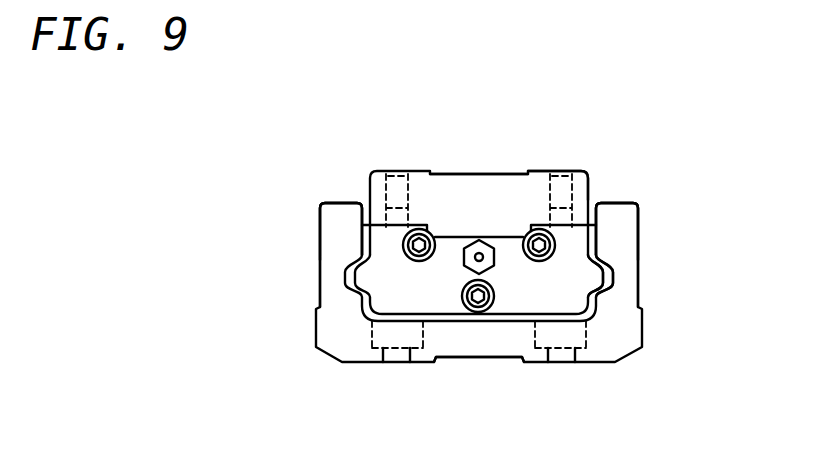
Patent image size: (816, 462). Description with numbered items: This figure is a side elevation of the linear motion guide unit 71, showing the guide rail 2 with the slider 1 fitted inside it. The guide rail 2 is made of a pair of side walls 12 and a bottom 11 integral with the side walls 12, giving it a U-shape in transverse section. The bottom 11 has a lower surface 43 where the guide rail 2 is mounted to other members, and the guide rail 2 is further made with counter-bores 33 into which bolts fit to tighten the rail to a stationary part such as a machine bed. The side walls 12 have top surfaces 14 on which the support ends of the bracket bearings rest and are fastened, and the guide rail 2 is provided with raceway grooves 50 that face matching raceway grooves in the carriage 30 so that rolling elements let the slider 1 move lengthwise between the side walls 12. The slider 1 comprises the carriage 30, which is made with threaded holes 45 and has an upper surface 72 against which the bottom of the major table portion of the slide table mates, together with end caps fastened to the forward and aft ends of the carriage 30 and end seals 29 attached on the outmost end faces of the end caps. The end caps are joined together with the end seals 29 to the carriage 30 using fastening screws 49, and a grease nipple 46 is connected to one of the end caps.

The slider 1 is at (503, 193).
The guide rail 2 is at (622, 314).
The bottom 11 is at (458, 360).
The side wall 12 is at (335, 222).
The top surface 14 is at (337, 202).
The end seal 29 is at (388, 273).
The carriage 30 is at (489, 207).
The counter-bore 33 is at (568, 343).
The lower surface 43 is at (360, 363).
The threaded hole 45 is at (397, 167).
The grease nipple 46 is at (478, 241).
The fastening screw 49 is at (538, 248).
The raceway groove 50 is at (610, 272).
The linear motion guide unit 71 is at (584, 170).
The upper surface 72 is at (542, 170).